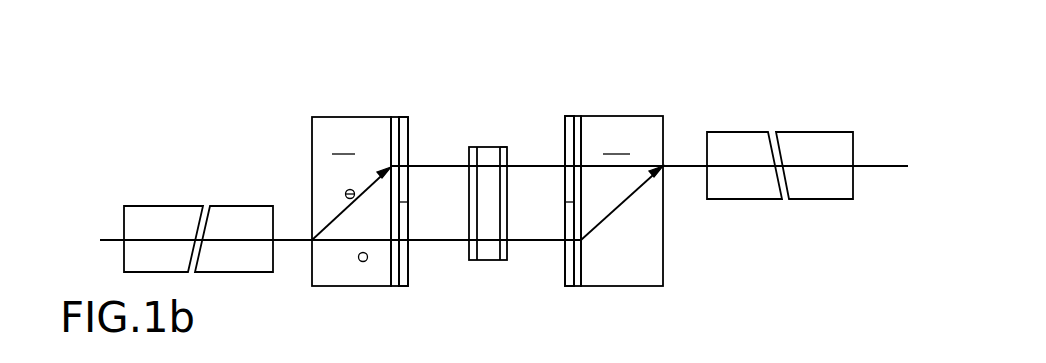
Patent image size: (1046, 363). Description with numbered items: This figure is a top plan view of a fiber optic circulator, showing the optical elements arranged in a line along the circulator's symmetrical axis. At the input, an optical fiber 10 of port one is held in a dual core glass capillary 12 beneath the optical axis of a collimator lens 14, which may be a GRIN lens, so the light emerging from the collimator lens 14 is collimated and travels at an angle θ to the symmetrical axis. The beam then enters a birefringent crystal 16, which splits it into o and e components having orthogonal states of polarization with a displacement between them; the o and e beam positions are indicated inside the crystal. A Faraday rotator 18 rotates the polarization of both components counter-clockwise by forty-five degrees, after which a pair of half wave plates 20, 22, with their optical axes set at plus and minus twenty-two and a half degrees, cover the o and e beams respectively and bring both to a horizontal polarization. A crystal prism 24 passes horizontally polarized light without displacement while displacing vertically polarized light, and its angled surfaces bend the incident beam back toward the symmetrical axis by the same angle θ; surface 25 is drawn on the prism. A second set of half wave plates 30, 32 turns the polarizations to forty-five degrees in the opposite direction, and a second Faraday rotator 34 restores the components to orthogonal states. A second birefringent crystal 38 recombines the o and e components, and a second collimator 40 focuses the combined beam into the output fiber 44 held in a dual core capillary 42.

The optical fiber 10 is at (115, 238).
The dual core glass capillary 12 is at (172, 210).
The collimator lens 14 is at (258, 210).
The birefringent crystal 16 is at (351, 201).
The Faraday rotator 18 is at (393, 117).
The half wave plate 20 is at (402, 117).
The half wave plate 22 is at (403, 201).
The crystal prism 24 is at (490, 260).
The plate surface 25 is at (505, 151).
The half wave plate 30 is at (568, 117).
The half wave plate 32 is at (569, 201).
The second Faraday rotator 34 is at (580, 117).
The second birefringent crystal 38 is at (622, 201).
The second collimator 40 is at (742, 135).
The dual core capillary 42 is at (820, 135).
The fiber 44 is at (890, 168).